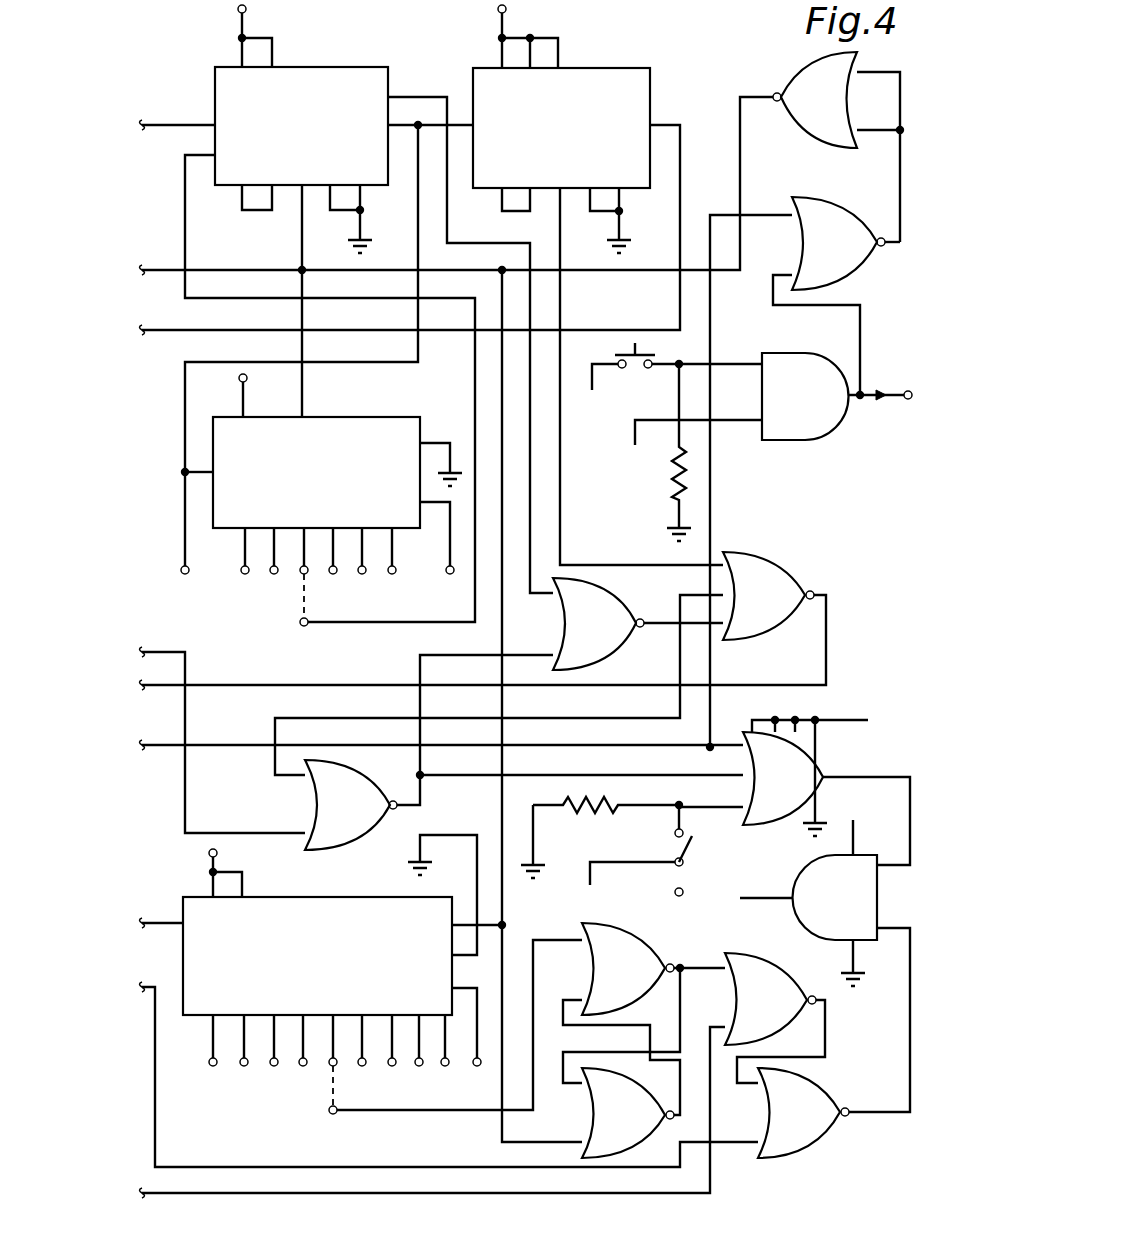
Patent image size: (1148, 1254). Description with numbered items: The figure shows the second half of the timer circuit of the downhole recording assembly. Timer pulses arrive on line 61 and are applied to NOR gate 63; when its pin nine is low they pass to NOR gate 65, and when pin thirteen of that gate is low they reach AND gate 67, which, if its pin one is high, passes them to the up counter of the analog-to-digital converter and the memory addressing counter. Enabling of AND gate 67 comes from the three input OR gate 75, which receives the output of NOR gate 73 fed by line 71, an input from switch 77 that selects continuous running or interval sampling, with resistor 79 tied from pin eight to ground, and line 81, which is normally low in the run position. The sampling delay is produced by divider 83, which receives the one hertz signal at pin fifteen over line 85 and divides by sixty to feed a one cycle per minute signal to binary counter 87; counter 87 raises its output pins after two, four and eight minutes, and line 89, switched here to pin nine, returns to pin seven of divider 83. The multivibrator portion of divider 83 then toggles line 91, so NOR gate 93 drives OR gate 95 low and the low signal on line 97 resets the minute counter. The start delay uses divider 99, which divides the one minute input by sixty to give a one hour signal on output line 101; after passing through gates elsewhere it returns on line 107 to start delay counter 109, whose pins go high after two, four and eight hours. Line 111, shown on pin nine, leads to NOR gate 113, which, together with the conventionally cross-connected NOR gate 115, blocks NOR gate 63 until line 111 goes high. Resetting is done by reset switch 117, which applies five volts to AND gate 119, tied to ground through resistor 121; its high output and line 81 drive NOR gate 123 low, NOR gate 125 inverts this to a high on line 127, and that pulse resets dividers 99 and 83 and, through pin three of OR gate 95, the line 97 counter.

The line 61 is at (233, 1193).
The NOR gate 63 is at (782, 968).
The NOR gate 65 is at (828, 1088).
The AND gate 67 is at (806, 870).
The line 71 is at (165, 652).
The NOR gate 73 is at (310, 807).
The OR gate 75 is at (822, 770).
The switch 77 is at (675, 849).
The resistor 79 is at (598, 813).
The line 81 is at (197, 745).
The divider 83 is at (310, 67).
The line 85 is at (190, 125).
The binary counter 87 is at (345, 417).
The line 89 is at (365, 625).
The line 91 is at (404, 97).
The NOR gate 93 is at (613, 590).
The OR gate 95 is at (777, 560).
The line 97 is at (197, 683).
The divider 99 is at (585, 68).
The output line 101 is at (158, 330).
The line 107 is at (158, 923).
The start delay counter 109 is at (325, 897).
The line 111 is at (420, 1115).
The NOR gate 113 is at (623, 928).
The NOR gate 115 is at (587, 1118).
The reset switch 117 is at (630, 352).
The AND gate 119 is at (783, 352).
The resistor 121 is at (670, 478).
The NOR gate 123 is at (845, 211).
The NOR gate 125 is at (797, 72).
The line 127 is at (156, 268).